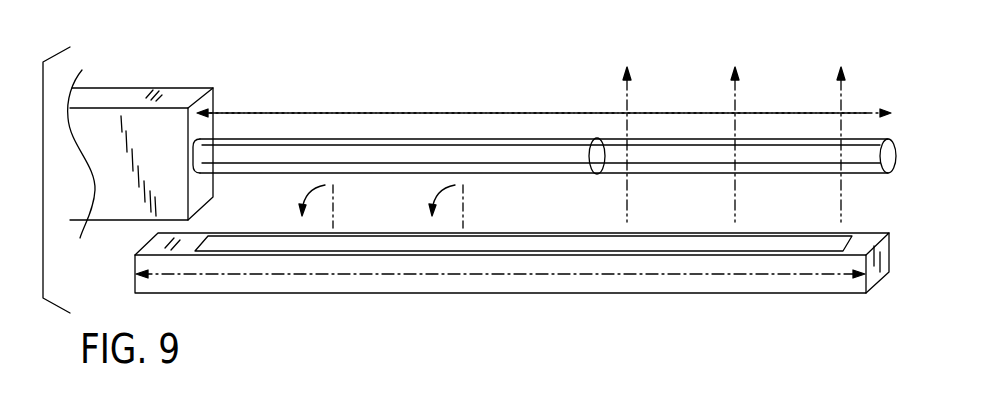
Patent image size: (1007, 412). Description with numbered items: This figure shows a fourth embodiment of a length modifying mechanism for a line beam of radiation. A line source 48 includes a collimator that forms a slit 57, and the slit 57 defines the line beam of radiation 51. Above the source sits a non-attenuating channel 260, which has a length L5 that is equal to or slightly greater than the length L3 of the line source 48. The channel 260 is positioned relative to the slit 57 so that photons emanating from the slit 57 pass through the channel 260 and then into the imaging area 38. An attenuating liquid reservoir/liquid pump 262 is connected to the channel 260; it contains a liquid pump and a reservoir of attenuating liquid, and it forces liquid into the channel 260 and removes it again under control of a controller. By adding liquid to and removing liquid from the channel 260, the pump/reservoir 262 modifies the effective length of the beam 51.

The attenuating liquid reservoir/liquid pump 262 is at (112, 118).
The non-attenuating channel 260 is at (857, 155).
The line beam of radiation 51 is at (818, 97).
The length of channel L5 is at (545, 113).
The imaging area 38 is at (688, 60).
The line source 48 is at (259, 314).
The slit 57 is at (517, 247).
The length of source L3 is at (322, 275).